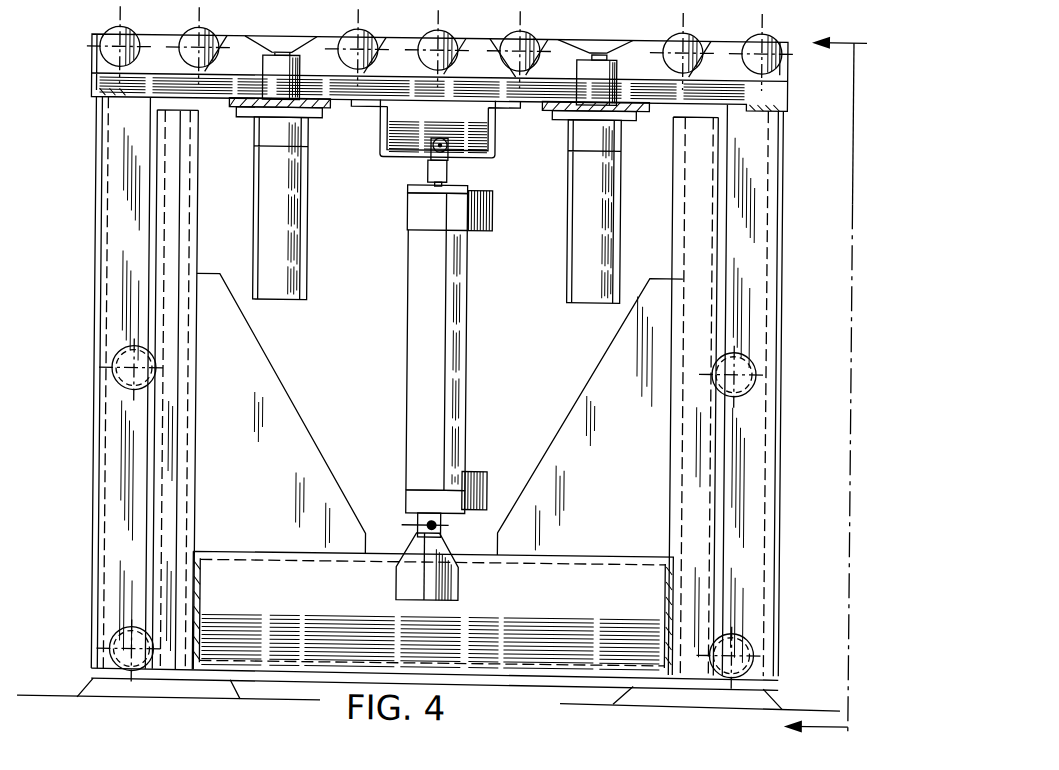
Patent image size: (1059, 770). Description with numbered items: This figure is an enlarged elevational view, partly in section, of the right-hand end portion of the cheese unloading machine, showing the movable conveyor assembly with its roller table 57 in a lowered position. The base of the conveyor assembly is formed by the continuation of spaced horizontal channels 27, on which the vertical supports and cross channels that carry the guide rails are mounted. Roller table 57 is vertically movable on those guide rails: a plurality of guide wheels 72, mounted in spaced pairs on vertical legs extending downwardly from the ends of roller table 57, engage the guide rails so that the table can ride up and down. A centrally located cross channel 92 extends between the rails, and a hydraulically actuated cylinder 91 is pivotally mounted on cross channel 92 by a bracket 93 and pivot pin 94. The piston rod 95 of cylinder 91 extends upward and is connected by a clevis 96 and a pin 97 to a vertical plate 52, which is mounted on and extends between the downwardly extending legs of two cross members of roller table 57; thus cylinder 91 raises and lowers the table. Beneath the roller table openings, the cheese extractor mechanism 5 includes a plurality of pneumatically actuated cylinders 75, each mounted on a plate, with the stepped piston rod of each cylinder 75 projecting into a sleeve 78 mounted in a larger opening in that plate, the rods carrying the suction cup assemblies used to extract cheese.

The roller table 57 is at (240, 30).
The sleeve 78 is at (617, 85).
The vertical plate 52 is at (390, 157).
The pin 97 is at (442, 149).
The clevis 96 is at (449, 168).
The piston rod 95 is at (424, 182).
The pneumatically actuated cylinder 75 is at (309, 262).
The hydraulically actuated cylinder 91 is at (469, 388).
The pivot pin 94 is at (447, 524).
The bracket 93 is at (463, 597).
The cross channel 92 is at (500, 663).
The guide wheel 72 is at (115, 645).
The horizontal channel 27 is at (103, 683).
The cheese extractor mechanism 5 is at (340, 340).